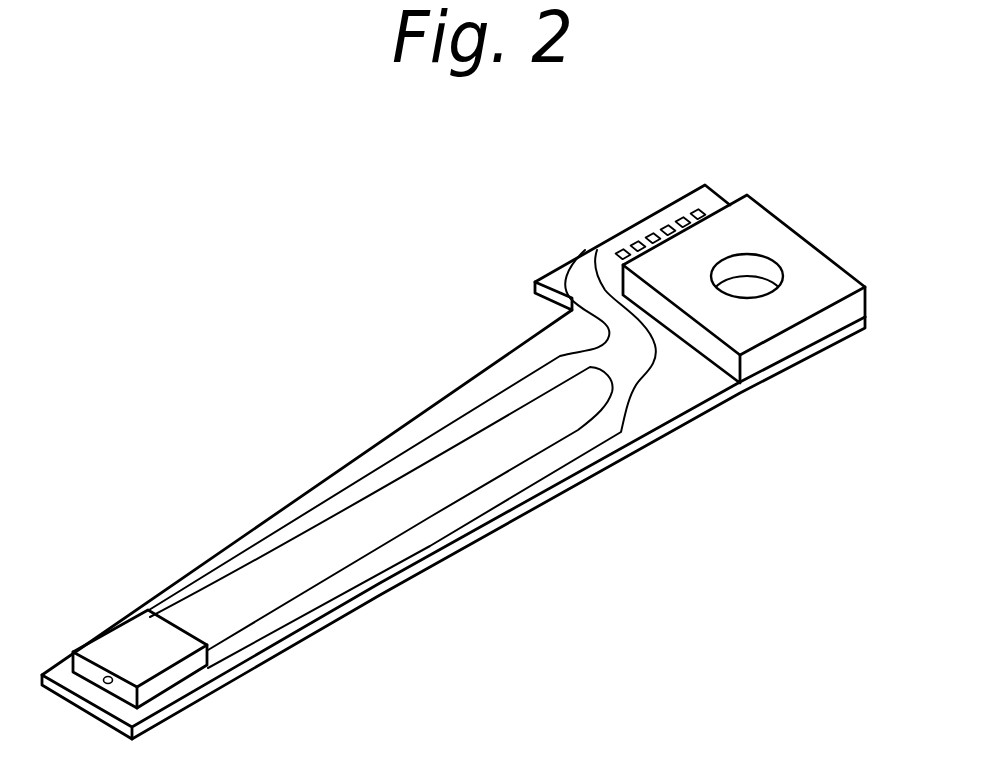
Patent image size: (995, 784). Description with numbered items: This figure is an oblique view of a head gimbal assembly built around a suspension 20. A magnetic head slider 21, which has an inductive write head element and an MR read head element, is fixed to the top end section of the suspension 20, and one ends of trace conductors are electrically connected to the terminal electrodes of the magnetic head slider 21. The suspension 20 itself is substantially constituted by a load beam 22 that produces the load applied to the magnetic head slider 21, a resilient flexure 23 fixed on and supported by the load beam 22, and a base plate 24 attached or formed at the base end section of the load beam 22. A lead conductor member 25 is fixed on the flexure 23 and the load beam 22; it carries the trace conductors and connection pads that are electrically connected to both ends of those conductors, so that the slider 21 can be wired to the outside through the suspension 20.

The suspension 20 is at (477, 368).
The magnetic head slider 21 is at (113, 652).
The load beam 22 is at (658, 410).
The resilient flexure 23 is at (548, 423).
The base plate 24 is at (807, 300).
The lead conductor member 25 is at (377, 556).